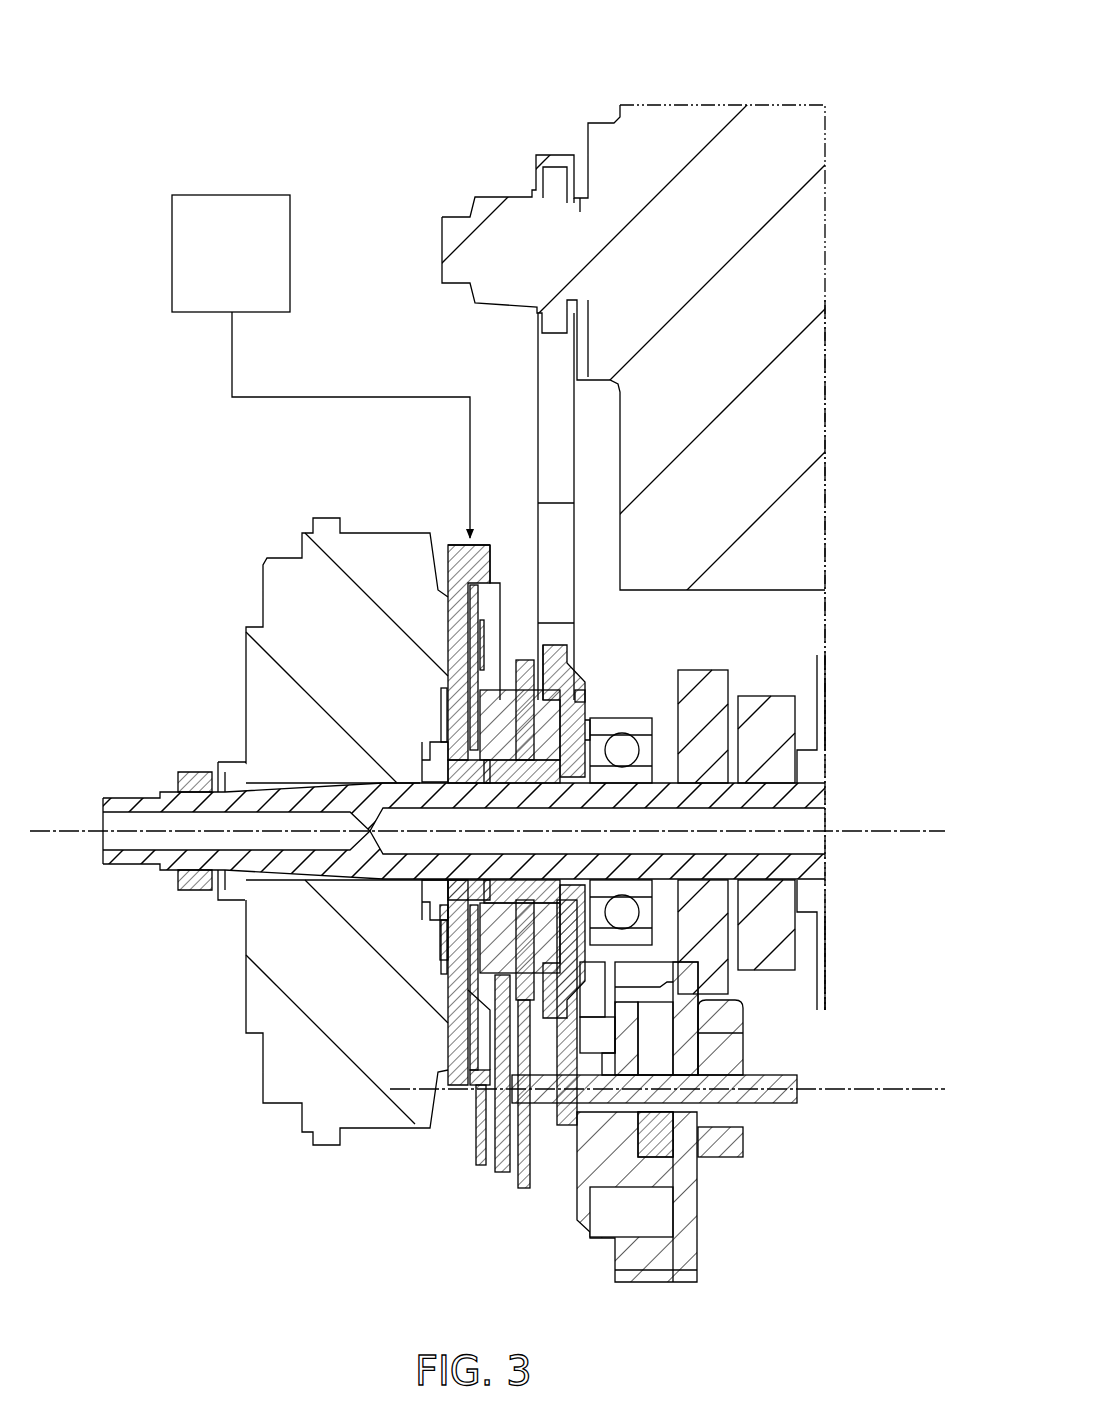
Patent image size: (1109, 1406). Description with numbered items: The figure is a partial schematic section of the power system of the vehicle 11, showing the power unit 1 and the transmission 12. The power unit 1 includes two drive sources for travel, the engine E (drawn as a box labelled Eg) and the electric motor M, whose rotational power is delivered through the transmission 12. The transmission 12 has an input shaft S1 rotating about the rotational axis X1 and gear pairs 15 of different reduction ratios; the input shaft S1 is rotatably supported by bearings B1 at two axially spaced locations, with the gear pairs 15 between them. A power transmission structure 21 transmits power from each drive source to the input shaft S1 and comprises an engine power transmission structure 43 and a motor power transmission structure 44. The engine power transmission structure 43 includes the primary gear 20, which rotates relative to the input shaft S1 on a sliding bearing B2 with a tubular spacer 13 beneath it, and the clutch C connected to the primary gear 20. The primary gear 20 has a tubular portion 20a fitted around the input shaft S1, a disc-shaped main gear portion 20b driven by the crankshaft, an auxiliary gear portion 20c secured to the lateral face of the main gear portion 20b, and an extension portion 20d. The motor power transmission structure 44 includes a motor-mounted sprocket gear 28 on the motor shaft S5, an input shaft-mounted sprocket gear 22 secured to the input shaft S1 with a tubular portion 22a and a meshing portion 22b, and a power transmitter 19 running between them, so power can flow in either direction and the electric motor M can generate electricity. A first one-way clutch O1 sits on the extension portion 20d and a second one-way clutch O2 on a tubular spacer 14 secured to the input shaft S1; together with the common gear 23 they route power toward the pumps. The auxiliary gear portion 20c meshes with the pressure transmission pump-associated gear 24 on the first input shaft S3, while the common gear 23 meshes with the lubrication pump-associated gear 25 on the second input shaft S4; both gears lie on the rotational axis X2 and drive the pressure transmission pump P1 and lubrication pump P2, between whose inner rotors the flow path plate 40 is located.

The power unit 1 is at (832, 216).
The vehicle 11 is at (880, 86).
The transmission 12 is at (855, 636).
The tubular spacer 13 is at (413, 777).
The tubular spacer 14 is at (448, 950).
The gear pairs 15 is at (678, 655).
The power transmitter 19 is at (537, 393).
The primary gear 20 is at (447, 600).
The tubular portion 20a is at (443, 738).
The main gear portion 20b is at (462, 1112).
The auxiliary gear portion 20c is at (498, 545).
The extension portion 20d is at (468, 992).
The power transmission structure 21 is at (420, 497).
The input shaft-mounted sprocket gear 22 is at (575, 665).
The tubular portion 22a is at (588, 740).
The meshing portion 22b is at (558, 640).
The common gear 23 is at (525, 655).
The pressure transmission pump-associated gear 24 is at (500, 1176).
The lubrication pump-associated gear 25 is at (524, 1192).
The motor-mounted sprocket gear 28 is at (548, 172).
The flow path plate 40 is at (700, 1282).
The engine power transmission structure 43 is at (440, 538).
The motor power transmission structure 44 is at (520, 183).
The bearings B1 is at (640, 718).
The sliding bearing B2 is at (470, 760).
The clutch C is at (286, 554).
The engine E is at (292, 245).
The engine Eg is at (321, 366).
The electric motor M is at (596, 122).
The first one-way clutch O1 is at (443, 717).
The second one-way clutch O2 is at (580, 705).
The pressure transmission pump P1 is at (740, 1160).
The lubrication pump P2 is at (656, 1168).
The input shaft S1 is at (132, 800).
The first input shaft S3 is at (760, 1074).
The second input shaft S4 is at (572, 1128).
The motor shaft S5 is at (577, 210).
The rotational axis X1 is at (862, 818).
The rotational axis X2 is at (862, 1076).